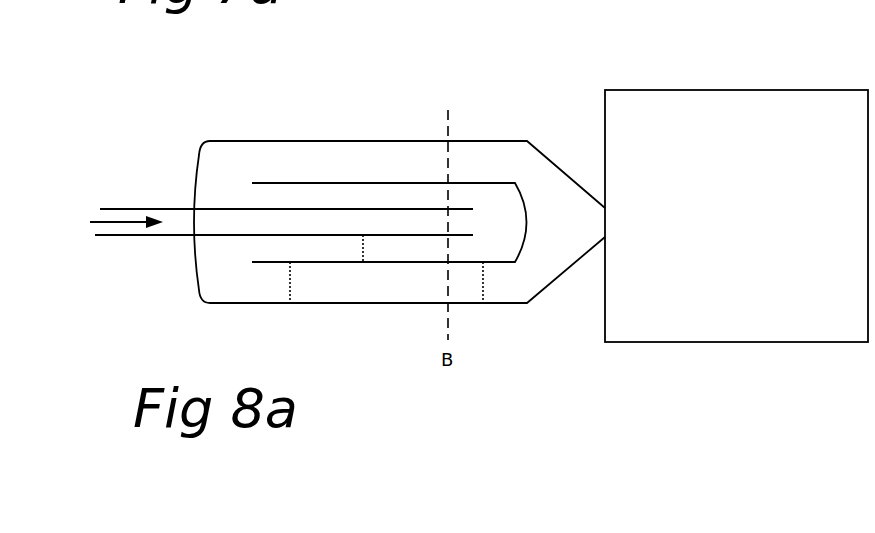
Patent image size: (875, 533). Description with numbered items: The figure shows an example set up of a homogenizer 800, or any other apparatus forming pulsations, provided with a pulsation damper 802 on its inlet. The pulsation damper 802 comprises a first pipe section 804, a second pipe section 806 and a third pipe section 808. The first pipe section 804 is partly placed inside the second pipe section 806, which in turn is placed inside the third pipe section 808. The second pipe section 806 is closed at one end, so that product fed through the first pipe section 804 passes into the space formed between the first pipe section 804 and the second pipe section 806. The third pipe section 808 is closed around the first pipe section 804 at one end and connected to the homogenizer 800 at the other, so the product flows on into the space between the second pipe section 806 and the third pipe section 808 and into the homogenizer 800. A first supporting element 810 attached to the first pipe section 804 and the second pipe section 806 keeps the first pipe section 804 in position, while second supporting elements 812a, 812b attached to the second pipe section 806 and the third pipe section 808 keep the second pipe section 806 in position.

The homogenizer 800 is at (741, 121).
The pulsation damper 802 is at (500, 78).
The first pipe section 804 is at (162, 209).
The second pipe section 806 is at (297, 183).
The third pipe section 808 is at (420, 141).
The first supporting element 810 is at (363, 262).
The second supporting element 812a is at (290, 298).
The second supporting element 812b is at (483, 280).